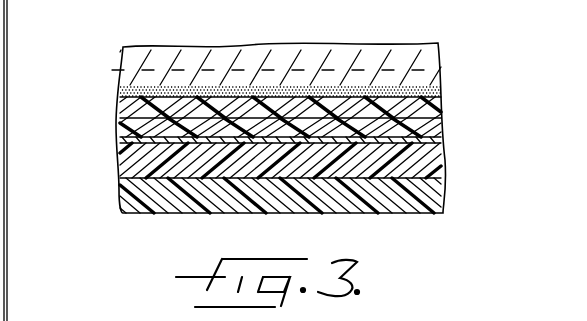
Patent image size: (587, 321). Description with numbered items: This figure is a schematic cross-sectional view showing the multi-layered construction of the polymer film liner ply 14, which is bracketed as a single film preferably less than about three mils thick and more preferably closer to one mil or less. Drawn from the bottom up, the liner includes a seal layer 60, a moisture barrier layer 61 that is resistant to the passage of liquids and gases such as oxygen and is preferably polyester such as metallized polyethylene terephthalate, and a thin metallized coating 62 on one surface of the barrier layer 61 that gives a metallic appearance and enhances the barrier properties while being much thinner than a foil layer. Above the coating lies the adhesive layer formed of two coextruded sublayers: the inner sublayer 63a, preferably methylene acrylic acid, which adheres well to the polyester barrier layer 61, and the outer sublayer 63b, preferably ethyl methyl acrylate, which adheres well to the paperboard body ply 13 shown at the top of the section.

The paperboard body ply 13 is at (366, 62).
The liner ply 14 is at (272, 166).
The outer sublayer 63b is at (133, 108).
The inner sublayer 63a is at (133, 127).
The metallized coating 62 is at (128, 146).
The moisture barrier layer 61 is at (128, 171).
The seal layer 60 is at (138, 200).